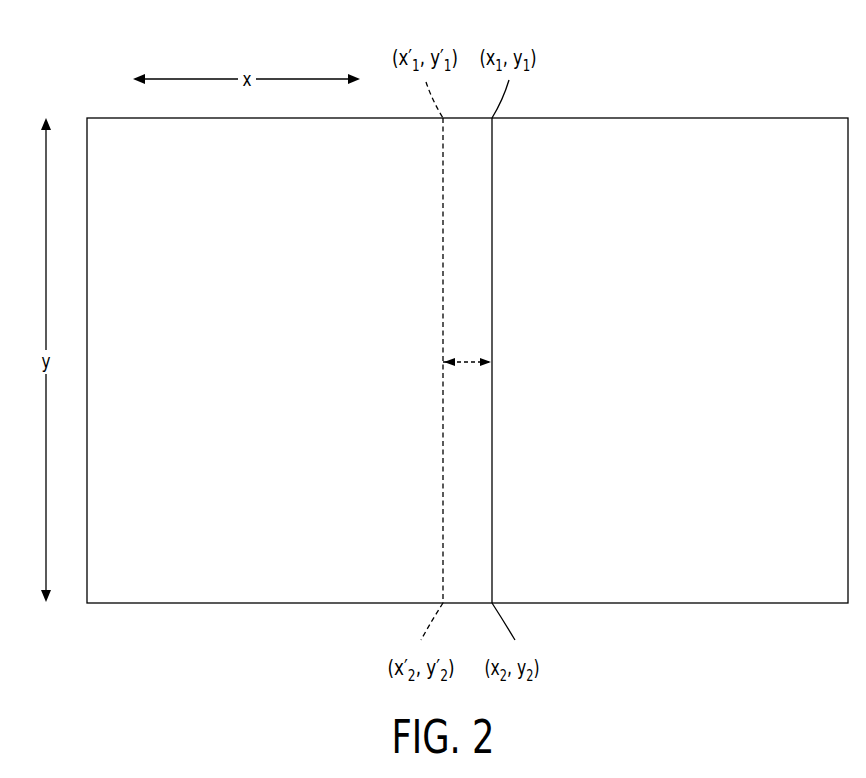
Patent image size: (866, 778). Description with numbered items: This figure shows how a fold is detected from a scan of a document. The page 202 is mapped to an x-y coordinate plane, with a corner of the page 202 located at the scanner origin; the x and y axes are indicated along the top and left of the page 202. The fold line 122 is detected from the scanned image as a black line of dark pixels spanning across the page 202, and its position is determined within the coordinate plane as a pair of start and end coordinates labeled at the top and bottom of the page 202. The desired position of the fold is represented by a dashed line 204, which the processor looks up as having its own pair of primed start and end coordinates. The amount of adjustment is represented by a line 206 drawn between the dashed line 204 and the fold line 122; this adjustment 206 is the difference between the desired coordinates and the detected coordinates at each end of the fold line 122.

The page 202 is at (757, 118).
The dashed line 204 is at (442, 256).
The fold line 122 is at (493, 312).
The line 206 is at (468, 369).